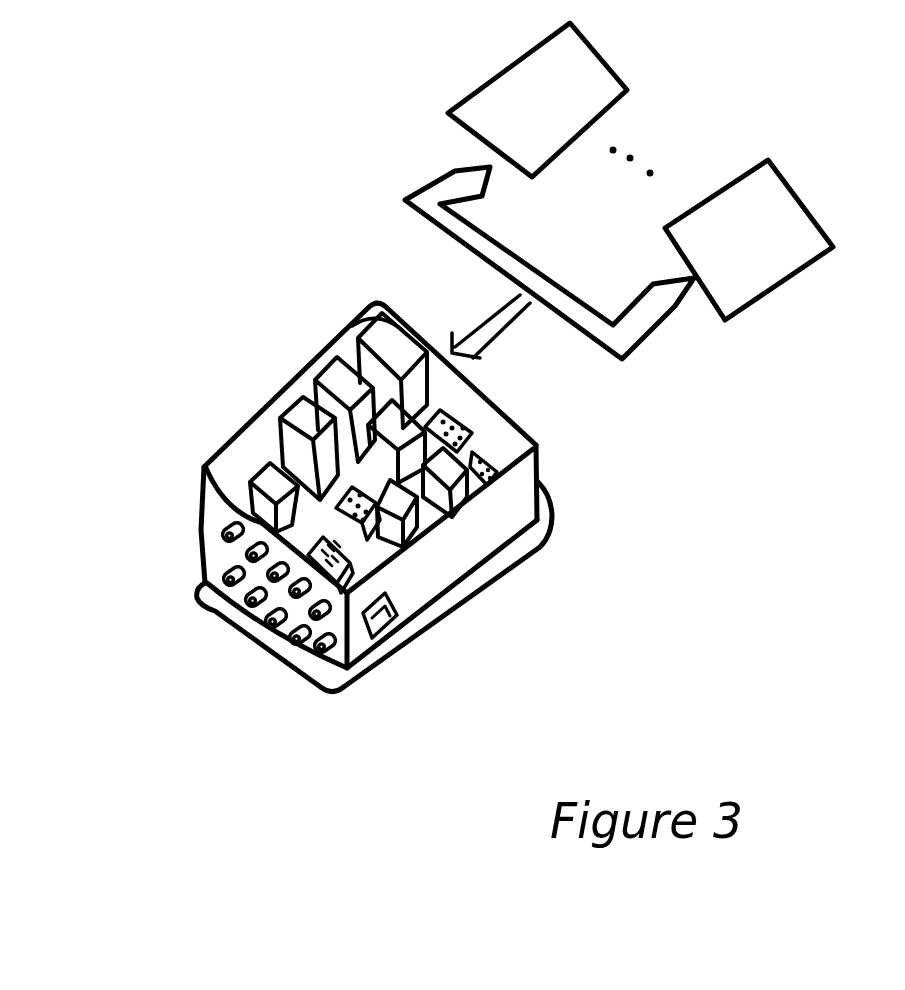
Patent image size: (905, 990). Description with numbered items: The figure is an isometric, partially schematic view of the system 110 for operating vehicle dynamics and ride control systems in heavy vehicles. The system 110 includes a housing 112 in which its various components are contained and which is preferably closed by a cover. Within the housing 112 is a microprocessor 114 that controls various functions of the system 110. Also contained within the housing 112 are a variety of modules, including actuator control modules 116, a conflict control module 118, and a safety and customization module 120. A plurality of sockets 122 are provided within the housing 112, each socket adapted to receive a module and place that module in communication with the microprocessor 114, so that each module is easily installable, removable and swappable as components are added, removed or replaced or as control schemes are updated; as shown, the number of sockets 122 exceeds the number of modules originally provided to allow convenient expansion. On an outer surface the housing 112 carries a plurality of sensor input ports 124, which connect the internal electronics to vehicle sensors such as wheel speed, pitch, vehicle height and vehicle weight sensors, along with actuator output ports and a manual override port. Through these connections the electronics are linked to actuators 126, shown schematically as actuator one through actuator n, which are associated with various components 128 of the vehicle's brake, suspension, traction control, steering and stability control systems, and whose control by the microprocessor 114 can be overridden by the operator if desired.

The system 110 is at (278, 243).
The housing 112 is at (527, 495).
The microprocessor 114 is at (352, 585).
The actuator control modules 116 is at (337, 377).
The conflict control module 118 is at (413, 518).
The safety and customization module 120 is at (262, 464).
The sockets 122 is at (463, 417).
The sensor input ports 124 is at (274, 653).
The actuators 126 is at (645, 73).
The components 128 is at (363, 690).